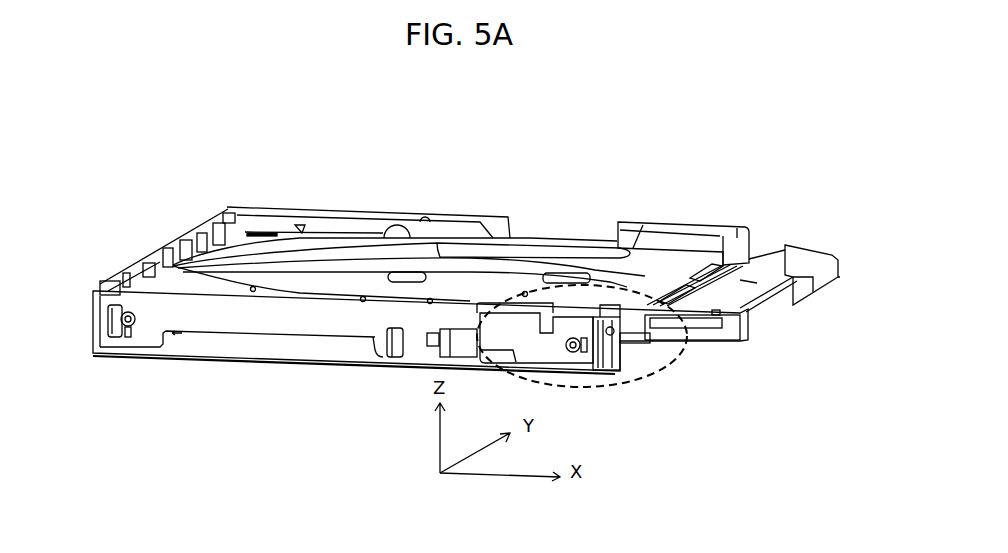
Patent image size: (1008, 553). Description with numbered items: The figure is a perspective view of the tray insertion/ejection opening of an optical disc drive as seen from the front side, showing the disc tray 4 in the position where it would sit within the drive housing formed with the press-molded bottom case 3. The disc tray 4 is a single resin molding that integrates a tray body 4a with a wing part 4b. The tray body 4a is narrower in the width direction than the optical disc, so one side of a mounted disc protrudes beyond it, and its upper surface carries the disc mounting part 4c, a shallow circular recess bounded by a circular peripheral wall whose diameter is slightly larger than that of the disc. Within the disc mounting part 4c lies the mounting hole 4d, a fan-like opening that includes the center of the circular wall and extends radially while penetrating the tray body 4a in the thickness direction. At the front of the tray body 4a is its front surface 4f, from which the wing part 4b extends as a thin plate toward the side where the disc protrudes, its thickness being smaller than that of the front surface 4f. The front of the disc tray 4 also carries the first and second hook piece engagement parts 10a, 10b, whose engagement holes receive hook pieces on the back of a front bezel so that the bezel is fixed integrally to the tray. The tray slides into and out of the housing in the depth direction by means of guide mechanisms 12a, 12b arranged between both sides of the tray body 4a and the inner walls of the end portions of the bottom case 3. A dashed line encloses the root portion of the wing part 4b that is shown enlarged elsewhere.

The bottom case 3 is at (770, 308).
The disc tray 4 is at (363, 322).
The tray body 4a is at (250, 230).
The wing part 4b is at (705, 305).
The disc mounting part 4c is at (314, 255).
The mounting hole 4d is at (358, 268).
The front surface 4f is at (275, 318).
The first hook piece engagement part 10a is at (705, 313).
The second hook piece engagement part 10b is at (124, 332).
The guide mechanism 12a is at (624, 342).
The guide mechanism 12b is at (142, 270).